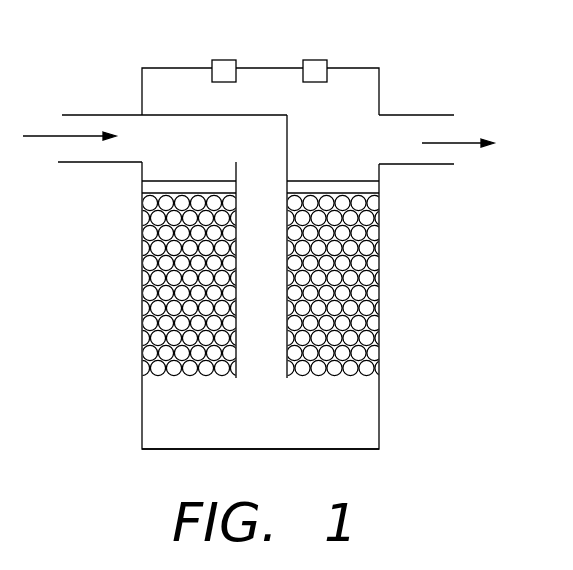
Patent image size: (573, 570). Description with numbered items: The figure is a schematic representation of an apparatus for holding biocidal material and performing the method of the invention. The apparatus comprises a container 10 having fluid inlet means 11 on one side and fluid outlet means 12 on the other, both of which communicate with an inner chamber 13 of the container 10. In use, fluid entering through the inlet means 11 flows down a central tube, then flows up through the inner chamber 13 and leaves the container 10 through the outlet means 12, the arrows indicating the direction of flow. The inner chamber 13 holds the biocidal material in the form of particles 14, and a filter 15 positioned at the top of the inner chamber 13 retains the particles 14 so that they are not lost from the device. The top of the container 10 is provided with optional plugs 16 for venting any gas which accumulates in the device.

The container 10 is at (142, 422).
The fluid inlet means 11 is at (91, 115).
The fluid outlet means 12 is at (422, 114).
The inner chamber 13 is at (363, 415).
The particles 14 is at (362, 275).
The filter 15 is at (379, 184).
The plugs 16 is at (318, 68).